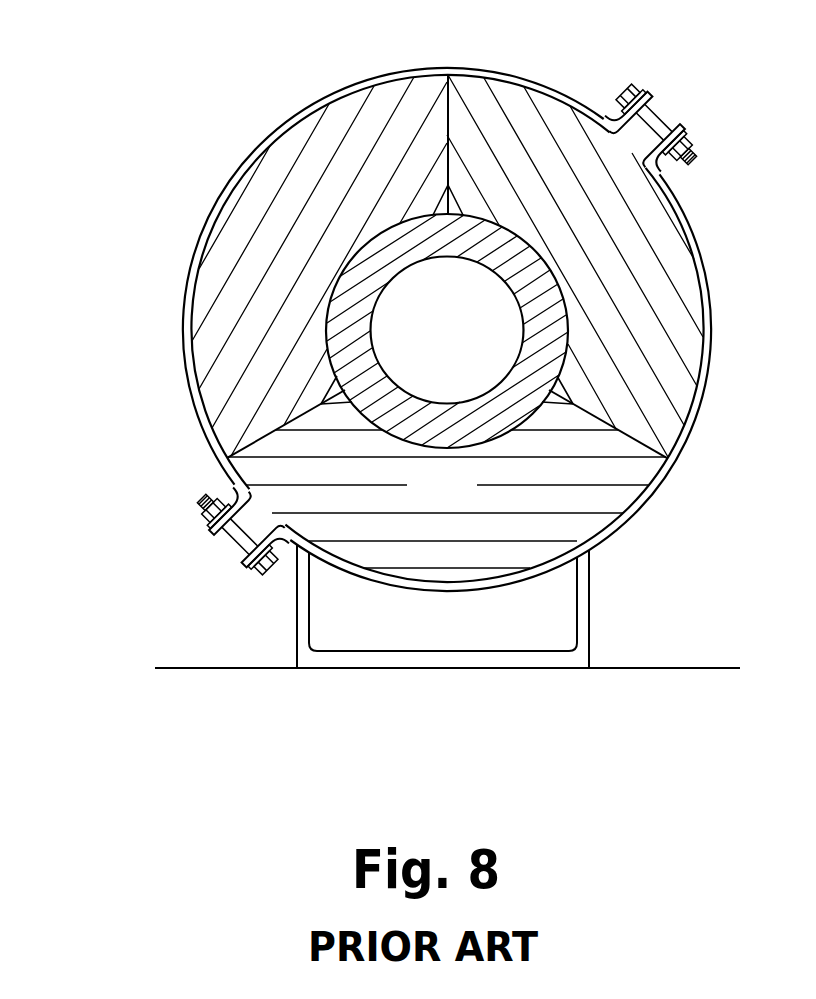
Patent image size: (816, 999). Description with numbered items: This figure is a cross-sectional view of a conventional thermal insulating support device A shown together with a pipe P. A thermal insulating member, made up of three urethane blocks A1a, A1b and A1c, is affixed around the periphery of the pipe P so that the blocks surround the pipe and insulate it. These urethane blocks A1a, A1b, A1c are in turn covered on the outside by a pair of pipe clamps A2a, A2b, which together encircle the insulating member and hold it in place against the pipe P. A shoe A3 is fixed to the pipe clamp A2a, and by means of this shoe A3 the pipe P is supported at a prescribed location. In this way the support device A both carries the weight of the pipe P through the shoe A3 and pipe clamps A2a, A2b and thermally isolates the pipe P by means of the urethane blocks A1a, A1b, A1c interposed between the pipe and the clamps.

The support device A is at (140, 358).
The pipe P is at (448, 259).
The urethane block A1a is at (317, 258).
The urethane block A1b is at (633, 260).
The urethane block A1c is at (463, 503).
The pipe clamp A2a is at (633, 508).
The pipe clamp A2b is at (307, 107).
The shoe A3 is at (582, 604).